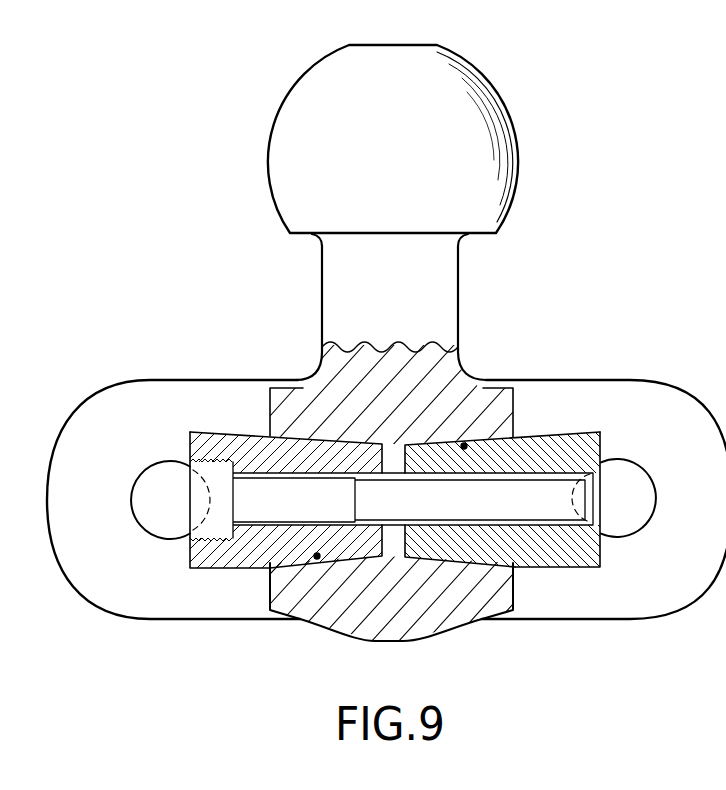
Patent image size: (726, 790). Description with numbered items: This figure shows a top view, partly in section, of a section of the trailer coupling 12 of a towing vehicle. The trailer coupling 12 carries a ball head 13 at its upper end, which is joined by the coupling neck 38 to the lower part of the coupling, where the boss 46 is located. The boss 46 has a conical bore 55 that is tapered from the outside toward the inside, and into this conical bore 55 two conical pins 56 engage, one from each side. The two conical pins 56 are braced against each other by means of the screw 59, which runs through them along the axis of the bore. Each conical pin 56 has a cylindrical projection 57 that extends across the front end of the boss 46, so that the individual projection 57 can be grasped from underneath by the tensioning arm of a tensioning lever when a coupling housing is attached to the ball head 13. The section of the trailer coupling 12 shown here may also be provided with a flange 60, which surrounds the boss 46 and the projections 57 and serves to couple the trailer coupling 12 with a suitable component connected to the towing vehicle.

The trailer coupling 12 is at (384, 212).
The ball head 13 is at (502, 100).
The coupling neck 38 is at (443, 282).
The boss 46 is at (311, 402).
The conical bore 55 is at (476, 440).
The conical pin 56 is at (264, 448).
The cylindrical projection 57 is at (212, 556).
The screw 59 is at (250, 498).
The flange 60 is at (118, 408).